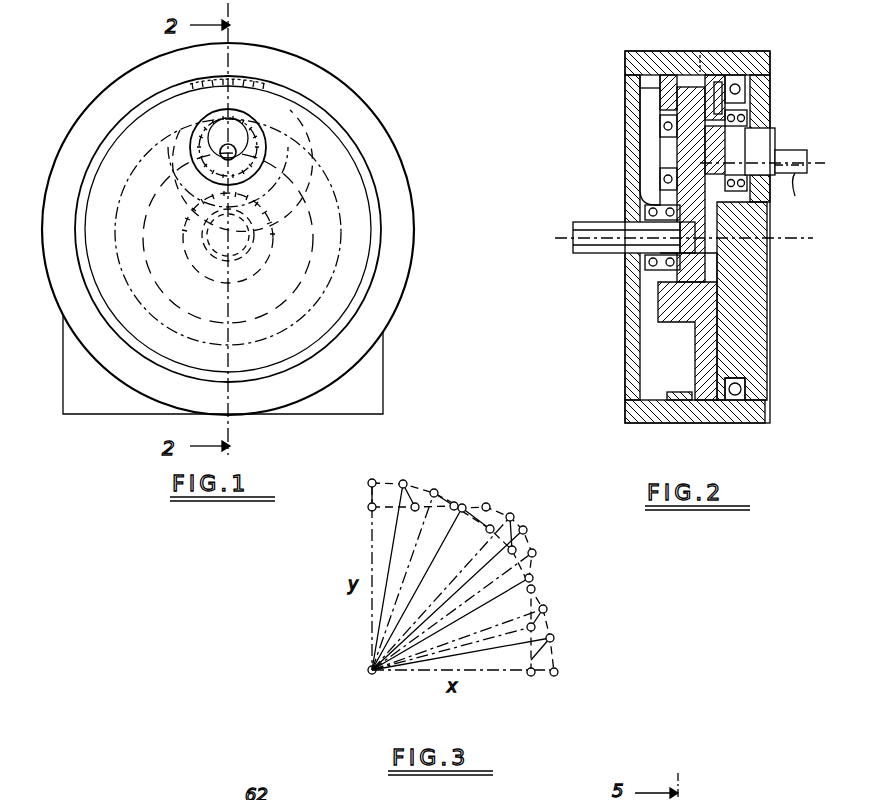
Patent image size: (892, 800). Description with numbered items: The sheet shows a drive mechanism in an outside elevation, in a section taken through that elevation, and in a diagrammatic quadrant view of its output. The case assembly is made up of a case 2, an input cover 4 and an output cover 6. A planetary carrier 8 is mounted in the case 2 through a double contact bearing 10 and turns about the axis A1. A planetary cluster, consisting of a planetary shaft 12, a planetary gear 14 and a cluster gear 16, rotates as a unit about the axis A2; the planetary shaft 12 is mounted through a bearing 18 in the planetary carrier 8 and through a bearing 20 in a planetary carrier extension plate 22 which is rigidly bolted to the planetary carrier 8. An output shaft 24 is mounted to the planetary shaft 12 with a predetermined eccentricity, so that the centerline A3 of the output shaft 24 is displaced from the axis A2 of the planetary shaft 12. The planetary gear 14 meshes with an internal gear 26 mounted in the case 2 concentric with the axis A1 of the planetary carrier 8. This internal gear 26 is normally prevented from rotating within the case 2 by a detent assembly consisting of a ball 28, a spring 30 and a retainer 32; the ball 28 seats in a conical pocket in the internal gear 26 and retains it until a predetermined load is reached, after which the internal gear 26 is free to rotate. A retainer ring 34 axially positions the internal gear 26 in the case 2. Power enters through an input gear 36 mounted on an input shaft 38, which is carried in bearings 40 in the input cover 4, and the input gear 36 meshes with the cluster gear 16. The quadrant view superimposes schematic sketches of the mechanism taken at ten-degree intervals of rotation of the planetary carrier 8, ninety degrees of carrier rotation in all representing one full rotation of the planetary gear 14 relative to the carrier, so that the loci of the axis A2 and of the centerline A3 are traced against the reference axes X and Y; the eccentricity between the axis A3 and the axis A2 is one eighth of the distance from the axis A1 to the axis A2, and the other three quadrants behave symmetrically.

In FIG. 1, the case 2 is at (378, 383).
In FIG. 2, the case 2 is at (683, 423).
In FIG. 2, the input cover 4 is at (625, 412).
In FIG. 2, the output cover 6 is at (760, 423).
In FIG. 2, the planetary carrier 8 is at (767, 357).
In FIG. 2, the double contact bearing 10 is at (740, 85).
In FIG. 1, the planetary shaft 12 is at (198, 136).
In FIG. 2, the planetary shaft 12 is at (775, 140).
In FIG. 1, the planetary gear 14 is at (290, 125).
In FIG. 2, the planetary gear 14 is at (760, 130).
In FIG. 1, the cluster gear 16 is at (247, 78).
In FIG. 2, the cluster gear 16 is at (677, 95).
In FIG. 2, the bearing 18 is at (745, 120).
In FIG. 2, the bearing 20 is at (660, 127).
In FIG. 1, the planetary carrier extension plate 22 is at (310, 200).
In FIG. 2, the planetary carrier extension plate 22 is at (660, 180).
In FIG. 1, the output shaft 24 is at (222, 152).
In FIG. 2, the output shaft 24 is at (808, 193).
In FIG. 1, the internal gear 26 is at (325, 168).
In FIG. 2, the internal gear 26 is at (700, 373).
In FIG. 2, the ball 28 is at (705, 75).
In FIG. 2, the spring 30 is at (718, 75).
In FIG. 2, the retainer 32 is at (705, 55).
In FIG. 2, the retainer ring 34 is at (650, 88).
In FIG. 1, the input gear 36 is at (258, 254).
In FIG. 2, the input gear 36 is at (685, 290).
In FIG. 2, the input shaft 38 is at (575, 253).
In FIG. 2, the bearings 40 is at (640, 278).
In FIG. 2, the axis of the planetary carrier A1 is at (795, 238).
In FIG. 3, the axis of the planetary carrier A1 is at (368, 675).
In FIG. 2, the axis of the planetary shaft A2 is at (815, 155).
In FIG. 3, the axis of the planetary shaft A2 is at (490, 462).
In FIG. 2, the centerline of the output shaft A3 is at (812, 165).
In FIG. 3, the centerline of the output shaft A3 is at (528, 650).